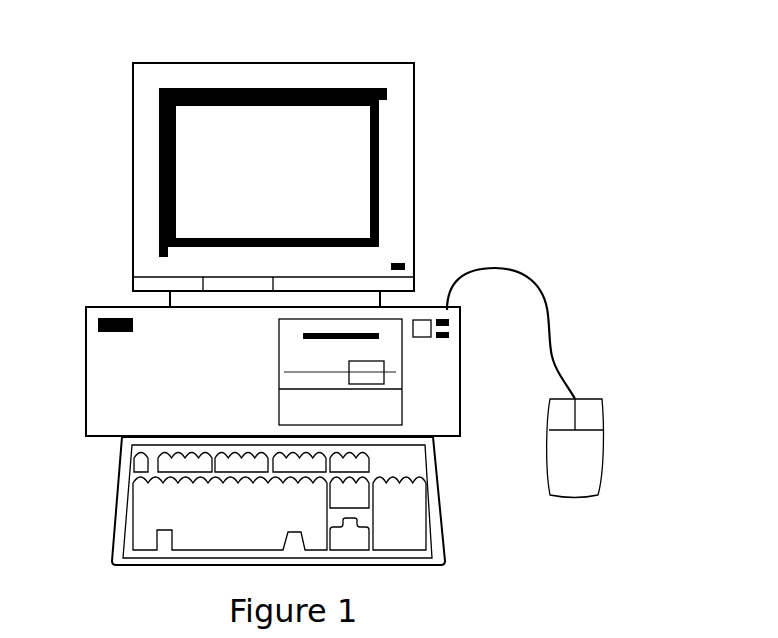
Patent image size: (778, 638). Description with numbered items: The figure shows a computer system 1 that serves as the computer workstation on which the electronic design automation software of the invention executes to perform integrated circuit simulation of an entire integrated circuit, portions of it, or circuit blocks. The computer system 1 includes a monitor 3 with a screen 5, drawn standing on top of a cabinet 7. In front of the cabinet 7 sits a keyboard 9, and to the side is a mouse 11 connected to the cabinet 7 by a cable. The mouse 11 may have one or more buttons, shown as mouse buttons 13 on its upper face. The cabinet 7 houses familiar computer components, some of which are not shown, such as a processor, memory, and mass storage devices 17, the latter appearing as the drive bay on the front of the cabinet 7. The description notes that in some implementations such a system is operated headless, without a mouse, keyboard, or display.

The computer system 1 is at (430, 46).
The monitor 3 is at (414, 150).
The screen 5 is at (193, 162).
The cabinet 7 is at (113, 310).
The keyboard 9 is at (158, 567).
The mouse 11 is at (575, 483).
The mouse buttons 13 is at (565, 418).
The mass storage devices 17 is at (393, 323).